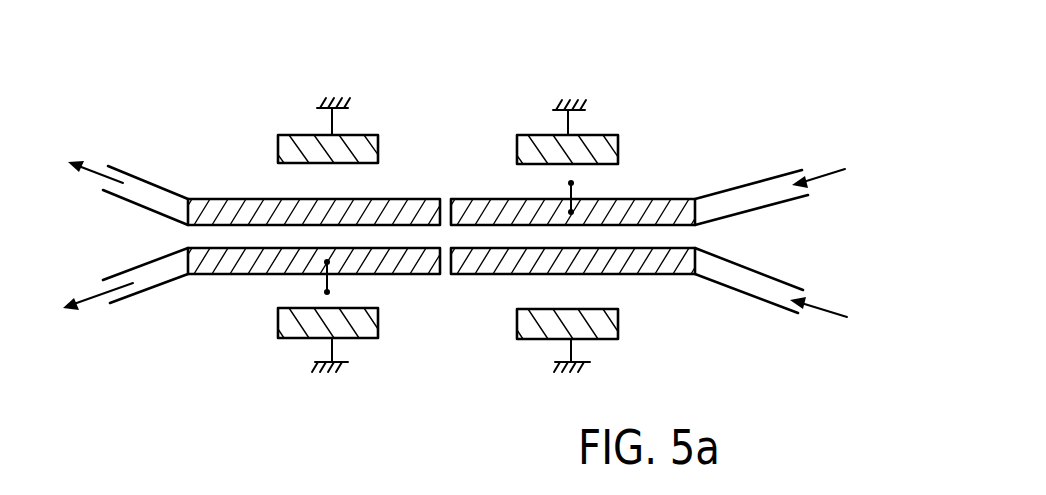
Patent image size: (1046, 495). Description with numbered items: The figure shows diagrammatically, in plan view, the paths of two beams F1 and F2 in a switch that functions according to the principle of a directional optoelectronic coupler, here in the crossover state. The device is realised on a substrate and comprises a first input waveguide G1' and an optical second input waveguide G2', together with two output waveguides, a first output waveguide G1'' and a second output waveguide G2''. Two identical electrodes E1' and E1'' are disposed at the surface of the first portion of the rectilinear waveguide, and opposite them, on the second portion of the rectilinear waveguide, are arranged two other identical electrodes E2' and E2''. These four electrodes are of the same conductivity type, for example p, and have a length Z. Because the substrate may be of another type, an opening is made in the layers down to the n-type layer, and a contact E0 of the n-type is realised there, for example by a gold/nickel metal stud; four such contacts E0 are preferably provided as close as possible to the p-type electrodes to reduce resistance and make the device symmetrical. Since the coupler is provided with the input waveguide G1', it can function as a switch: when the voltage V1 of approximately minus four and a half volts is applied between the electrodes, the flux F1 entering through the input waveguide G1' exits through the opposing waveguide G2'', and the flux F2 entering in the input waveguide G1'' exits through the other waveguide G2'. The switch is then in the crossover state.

The electrode E1' is at (573, 182).
The electrode E1'' is at (314, 177).
The electrode E2' is at (573, 292).
The electrode E2'' is at (314, 293).
The first input waveguide G1' is at (751, 178).
The first output waveguide G1'' is at (145, 173).
The second input waveguide G2' is at (749, 308).
The second output waveguide G2'' is at (145, 308).
The flux F1 is at (457, 242).
The flux F2 is at (460, 235).
The n-type contact E0 is at (378, 143).
The voltage V1 is at (463, 240).